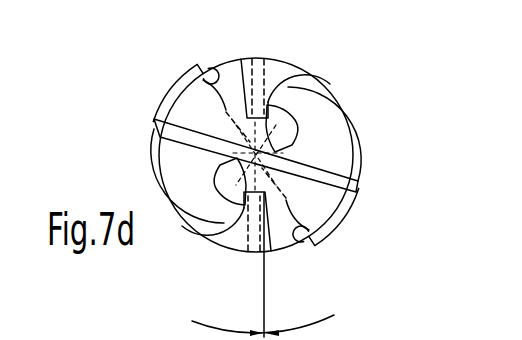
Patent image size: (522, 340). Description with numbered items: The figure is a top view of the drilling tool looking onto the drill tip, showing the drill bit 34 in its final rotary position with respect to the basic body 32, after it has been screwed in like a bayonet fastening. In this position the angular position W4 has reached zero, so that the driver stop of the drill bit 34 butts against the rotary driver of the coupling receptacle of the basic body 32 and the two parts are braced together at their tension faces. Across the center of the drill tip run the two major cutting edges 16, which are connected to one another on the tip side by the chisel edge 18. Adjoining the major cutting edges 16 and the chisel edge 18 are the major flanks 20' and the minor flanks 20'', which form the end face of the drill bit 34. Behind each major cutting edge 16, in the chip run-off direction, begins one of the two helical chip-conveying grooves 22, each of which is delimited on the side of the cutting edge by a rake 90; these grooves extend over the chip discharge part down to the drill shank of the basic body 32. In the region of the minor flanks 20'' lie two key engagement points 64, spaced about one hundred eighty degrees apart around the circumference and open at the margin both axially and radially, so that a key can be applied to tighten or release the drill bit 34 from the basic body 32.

The major cutting edges 16 is at (354, 142).
The chisel edge 18 is at (311, 4).
The major flanks 20' is at (297, 155).
The minor flanks 20'' is at (349, 207).
The chip-conveying grooves 22 is at (311, 107).
The rake 90 is at (334, 99).
The basic body 32 is at (202, 203).
The drill bit 34 is at (197, 107).
The key engagement points 64 is at (206, 69).
The angular position W4 is at (263, 265).